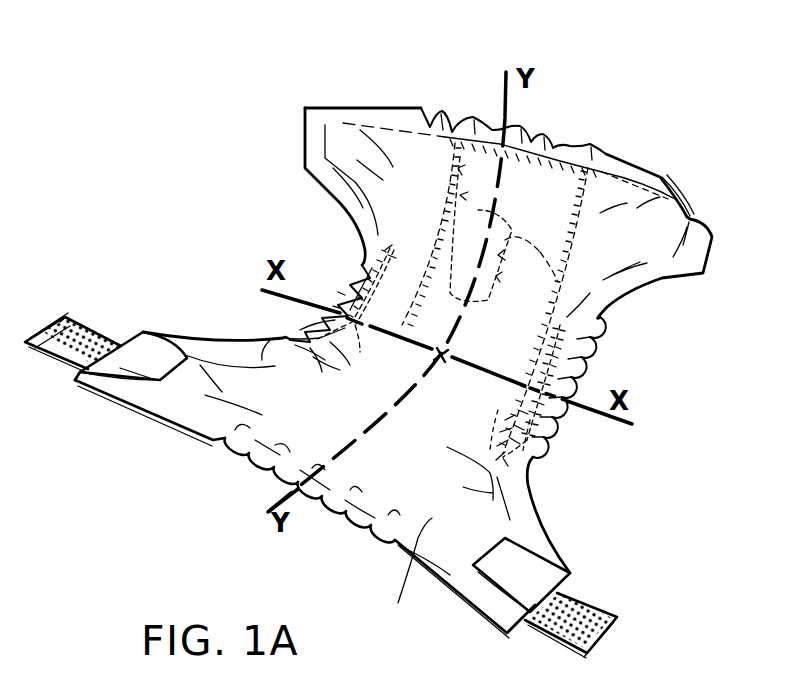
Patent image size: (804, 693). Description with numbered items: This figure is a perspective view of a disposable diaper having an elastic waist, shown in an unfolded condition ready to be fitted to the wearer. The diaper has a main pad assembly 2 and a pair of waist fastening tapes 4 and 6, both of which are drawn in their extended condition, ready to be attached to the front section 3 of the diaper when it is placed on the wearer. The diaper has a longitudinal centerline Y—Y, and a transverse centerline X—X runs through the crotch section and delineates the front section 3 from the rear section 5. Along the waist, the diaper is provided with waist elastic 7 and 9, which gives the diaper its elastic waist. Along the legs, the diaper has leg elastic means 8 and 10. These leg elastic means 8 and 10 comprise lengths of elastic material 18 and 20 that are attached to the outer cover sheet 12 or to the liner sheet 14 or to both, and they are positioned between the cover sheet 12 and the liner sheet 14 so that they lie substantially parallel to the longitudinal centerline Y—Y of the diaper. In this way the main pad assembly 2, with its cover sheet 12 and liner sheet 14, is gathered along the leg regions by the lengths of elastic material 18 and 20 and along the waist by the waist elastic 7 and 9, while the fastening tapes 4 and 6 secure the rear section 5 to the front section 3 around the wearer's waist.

The main pad assembly 2 is at (473, 240).
The front section 3 is at (455, 96).
The waist fastening tape 4 is at (572, 592).
The rear section 5 is at (342, 518).
The waist fastening tape 6 is at (92, 333).
The waist elastic 7 is at (243, 468).
The leg elastic means 8 is at (383, 262).
The waist elastic 9 is at (562, 133).
The leg elastic means 10 is at (513, 443).
The outer cover sheet 12 is at (687, 203).
The liner sheet 14 is at (413, 572).
The length of elastic material 18 is at (300, 316).
The length of elastic material 20 is at (602, 345).